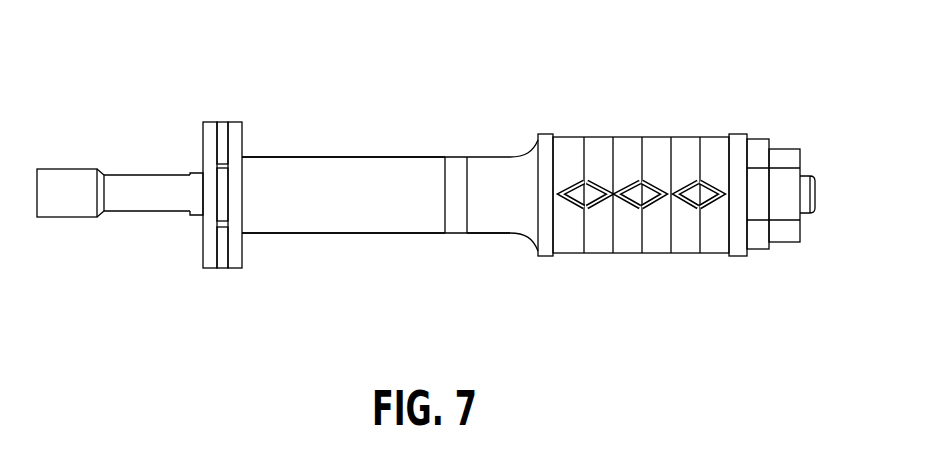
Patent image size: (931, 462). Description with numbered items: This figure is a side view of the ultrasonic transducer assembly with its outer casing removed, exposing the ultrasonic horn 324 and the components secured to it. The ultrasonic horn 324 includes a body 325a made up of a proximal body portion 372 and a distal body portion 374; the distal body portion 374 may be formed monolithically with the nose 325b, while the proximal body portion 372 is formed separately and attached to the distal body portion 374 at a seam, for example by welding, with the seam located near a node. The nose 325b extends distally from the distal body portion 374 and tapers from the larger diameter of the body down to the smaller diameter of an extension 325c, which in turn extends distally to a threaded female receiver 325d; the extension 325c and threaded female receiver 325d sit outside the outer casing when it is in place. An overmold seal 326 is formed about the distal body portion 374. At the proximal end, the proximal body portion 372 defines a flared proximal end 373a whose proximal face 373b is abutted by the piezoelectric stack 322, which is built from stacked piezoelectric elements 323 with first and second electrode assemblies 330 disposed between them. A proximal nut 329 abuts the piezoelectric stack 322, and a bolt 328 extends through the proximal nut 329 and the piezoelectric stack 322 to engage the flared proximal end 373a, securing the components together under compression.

The piezoelectric stack 322 is at (647, 268).
The piezoelectric elements 323 is at (690, 152).
The ultrasonic horn 324 is at (365, 143).
The body 325a is at (398, 240).
The nose 325b is at (197, 181).
The extension 325c is at (153, 200).
The threaded female receiver 325d is at (67, 207).
The overmold seal 326 is at (235, 268).
The bolt 328 is at (758, 150).
The proximal nut 329 is at (817, 196).
The first and second electrode assemblies 330 is at (596, 203).
The proximal body portion 372 is at (508, 224).
The flared proximal end 373a is at (535, 149).
The proximal face 373b is at (555, 135).
The distal body portion 374 is at (312, 218).